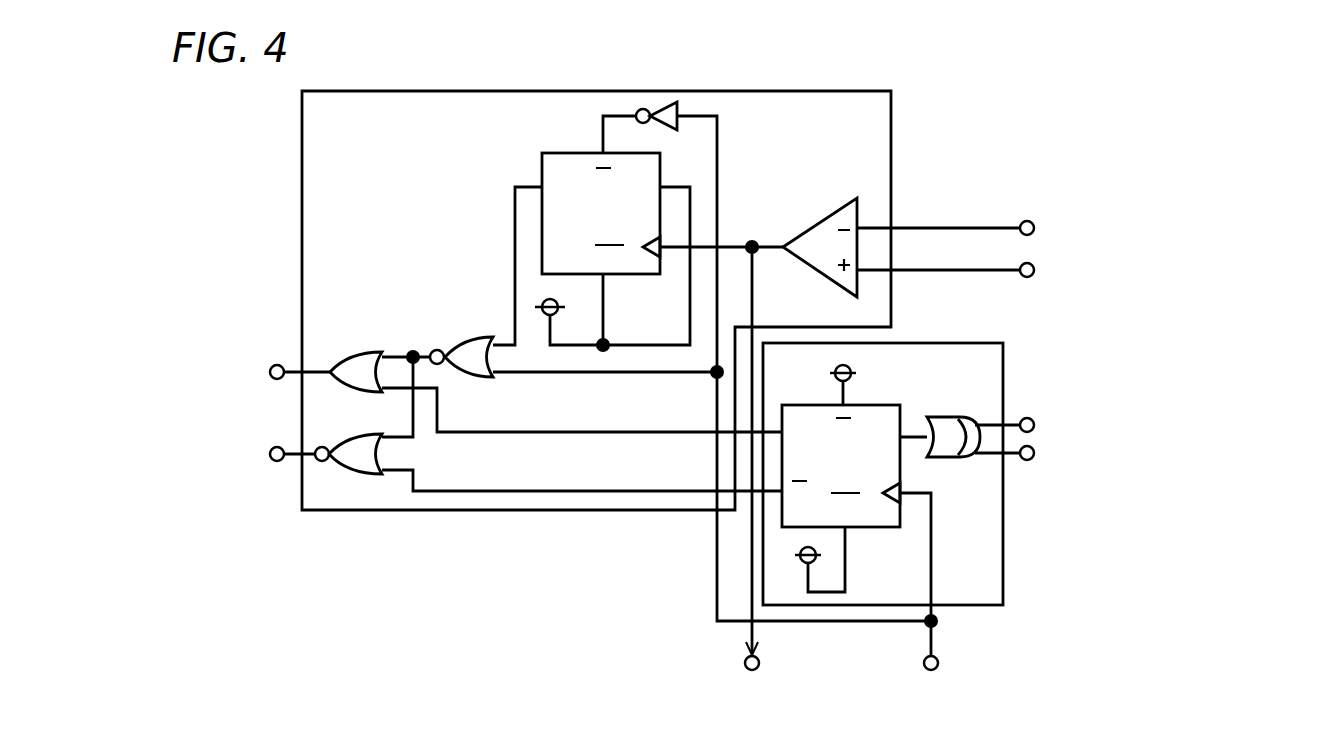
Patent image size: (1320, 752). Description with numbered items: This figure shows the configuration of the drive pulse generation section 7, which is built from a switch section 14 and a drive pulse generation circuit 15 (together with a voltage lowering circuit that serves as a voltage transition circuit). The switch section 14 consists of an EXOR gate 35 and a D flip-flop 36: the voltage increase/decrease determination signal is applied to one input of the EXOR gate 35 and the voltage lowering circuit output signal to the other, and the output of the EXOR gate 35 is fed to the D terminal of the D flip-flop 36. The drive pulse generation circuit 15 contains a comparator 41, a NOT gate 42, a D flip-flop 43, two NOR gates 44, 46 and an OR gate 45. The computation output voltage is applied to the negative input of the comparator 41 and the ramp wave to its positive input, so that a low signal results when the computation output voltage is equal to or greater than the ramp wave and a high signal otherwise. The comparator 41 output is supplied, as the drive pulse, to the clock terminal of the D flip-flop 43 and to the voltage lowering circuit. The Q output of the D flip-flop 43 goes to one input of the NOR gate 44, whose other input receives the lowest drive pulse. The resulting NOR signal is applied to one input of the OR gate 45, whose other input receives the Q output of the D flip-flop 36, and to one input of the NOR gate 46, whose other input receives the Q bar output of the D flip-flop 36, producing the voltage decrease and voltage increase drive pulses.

The drive pulse generation section 7 is at (947, 141).
The switch section 14 is at (1003, 365).
The drive pulse generation circuit 15 is at (499, 512).
The EXOR gate 35 is at (958, 418).
The D flip-flop 36 is at (872, 527).
The comparator 41 is at (838, 208).
The NOT gate 42 is at (680, 130).
The D flip-flop 43 is at (552, 152).
The NOR gate 44 is at (472, 337).
The OR gate 45 is at (360, 352).
The NOR gate 46 is at (358, 478).